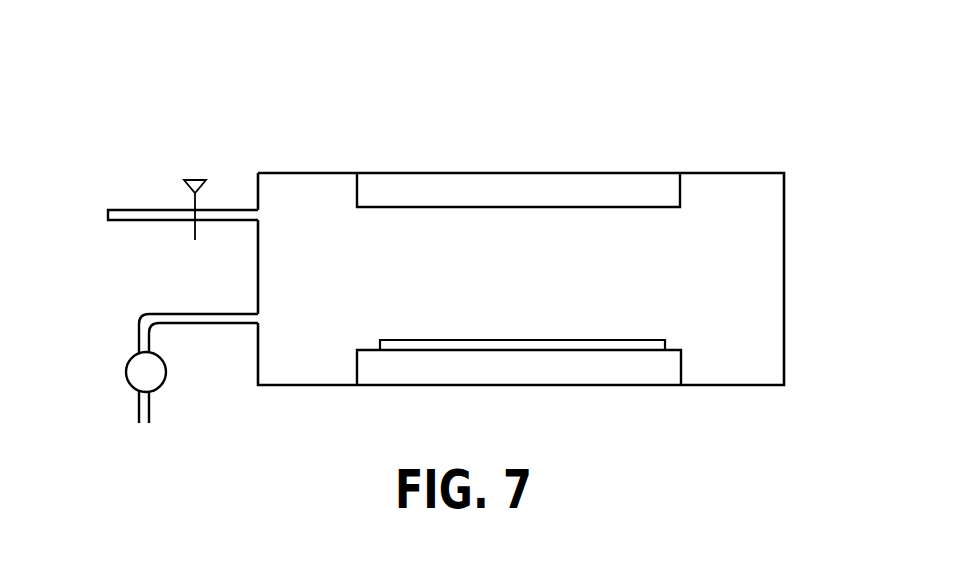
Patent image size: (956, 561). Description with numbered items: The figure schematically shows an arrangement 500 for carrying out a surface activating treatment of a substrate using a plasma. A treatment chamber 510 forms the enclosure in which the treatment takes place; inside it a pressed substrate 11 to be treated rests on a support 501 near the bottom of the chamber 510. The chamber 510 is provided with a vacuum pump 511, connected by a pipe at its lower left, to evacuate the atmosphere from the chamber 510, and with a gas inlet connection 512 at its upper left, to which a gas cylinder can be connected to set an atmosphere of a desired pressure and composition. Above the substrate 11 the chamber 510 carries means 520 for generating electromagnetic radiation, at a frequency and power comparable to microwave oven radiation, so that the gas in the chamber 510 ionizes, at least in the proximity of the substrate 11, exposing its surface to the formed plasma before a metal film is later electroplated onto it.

The arrangement 500 is at (705, 98).
The treatment chamber 510 is at (770, 264).
The means for generating electromagnetic radiation 520 is at (417, 183).
The support 501 is at (414, 372).
The substrate 11 is at (530, 341).
The gas inlet connection 512 is at (128, 210).
The vacuum pump 511 is at (126, 368).